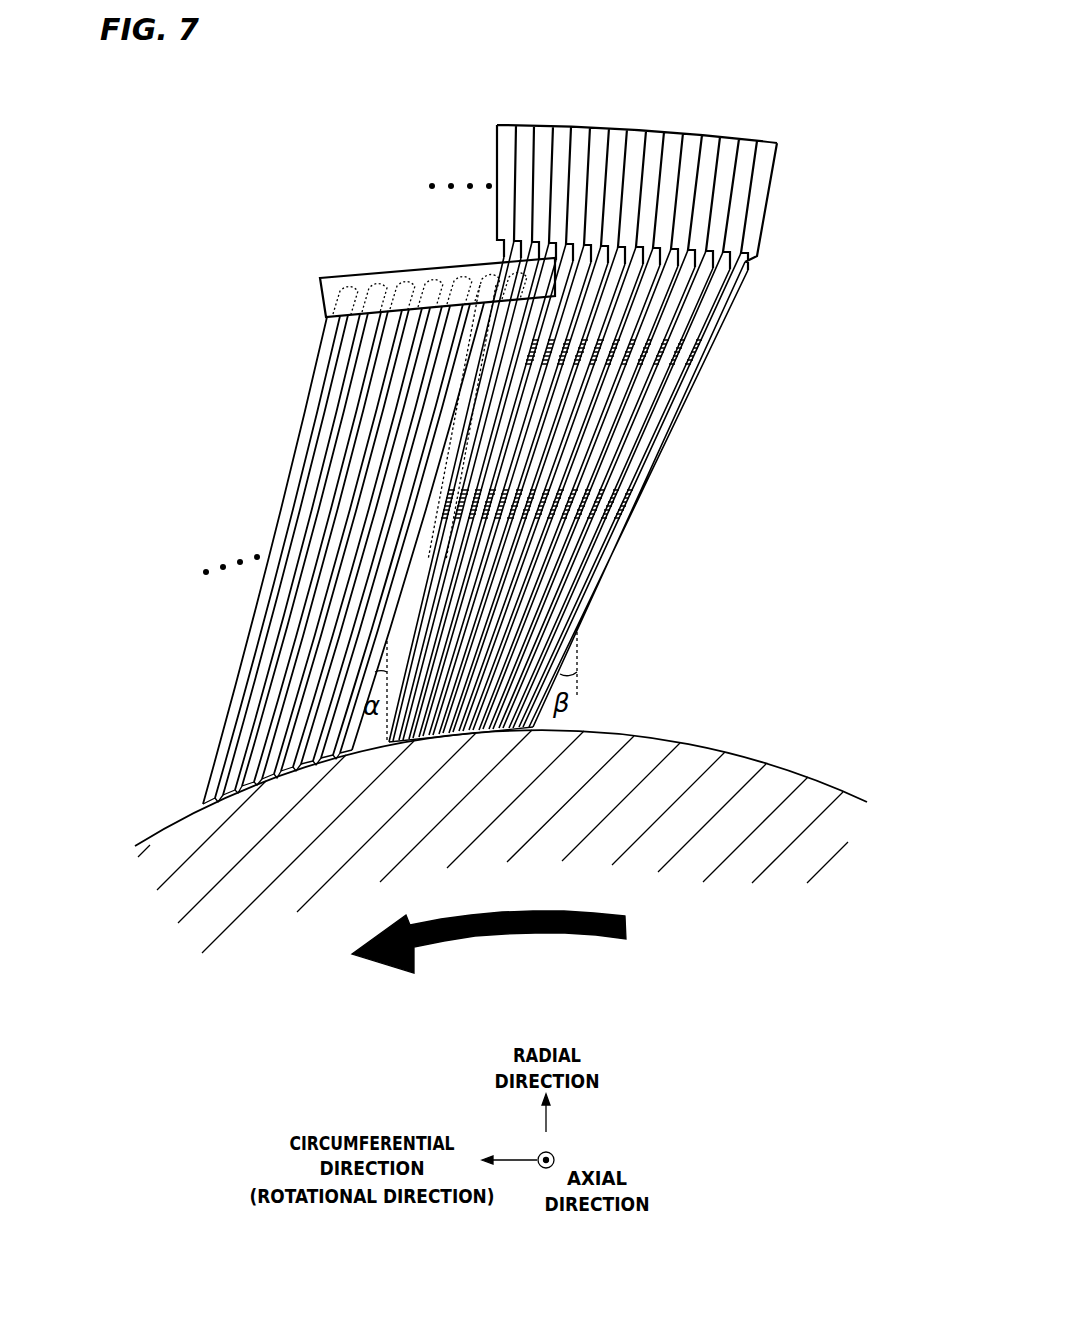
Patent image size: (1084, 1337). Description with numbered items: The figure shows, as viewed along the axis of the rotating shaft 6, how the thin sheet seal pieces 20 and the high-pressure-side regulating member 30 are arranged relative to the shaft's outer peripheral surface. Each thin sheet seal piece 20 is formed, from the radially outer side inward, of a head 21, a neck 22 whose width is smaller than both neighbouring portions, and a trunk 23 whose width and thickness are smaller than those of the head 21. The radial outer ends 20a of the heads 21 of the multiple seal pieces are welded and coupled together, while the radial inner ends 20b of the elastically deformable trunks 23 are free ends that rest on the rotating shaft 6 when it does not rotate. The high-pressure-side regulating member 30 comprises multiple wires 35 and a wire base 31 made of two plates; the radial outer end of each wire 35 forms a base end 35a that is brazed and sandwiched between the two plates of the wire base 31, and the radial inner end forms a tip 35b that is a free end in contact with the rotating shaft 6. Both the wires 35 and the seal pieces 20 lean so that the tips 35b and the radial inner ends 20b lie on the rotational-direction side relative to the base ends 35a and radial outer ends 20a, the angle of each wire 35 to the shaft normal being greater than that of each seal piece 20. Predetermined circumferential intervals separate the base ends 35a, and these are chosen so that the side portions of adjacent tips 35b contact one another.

The rotating shaft 6 is at (300, 878).
The thin sheet seal piece 20 is at (660, 404).
The radial outer end of thin sheet seal piece 20a is at (732, 140).
The radial inner end of thin sheet seal piece 20b is at (538, 744).
The head 21 is at (756, 212).
The neck 22 is at (742, 268).
The trunk 23 is at (707, 348).
The high-pressure-side regulating member 30 is at (335, 496).
The wire base 31 is at (374, 275).
The wire 35 is at (299, 553).
The base end 35a is at (376, 270).
The tip 35b is at (207, 804).